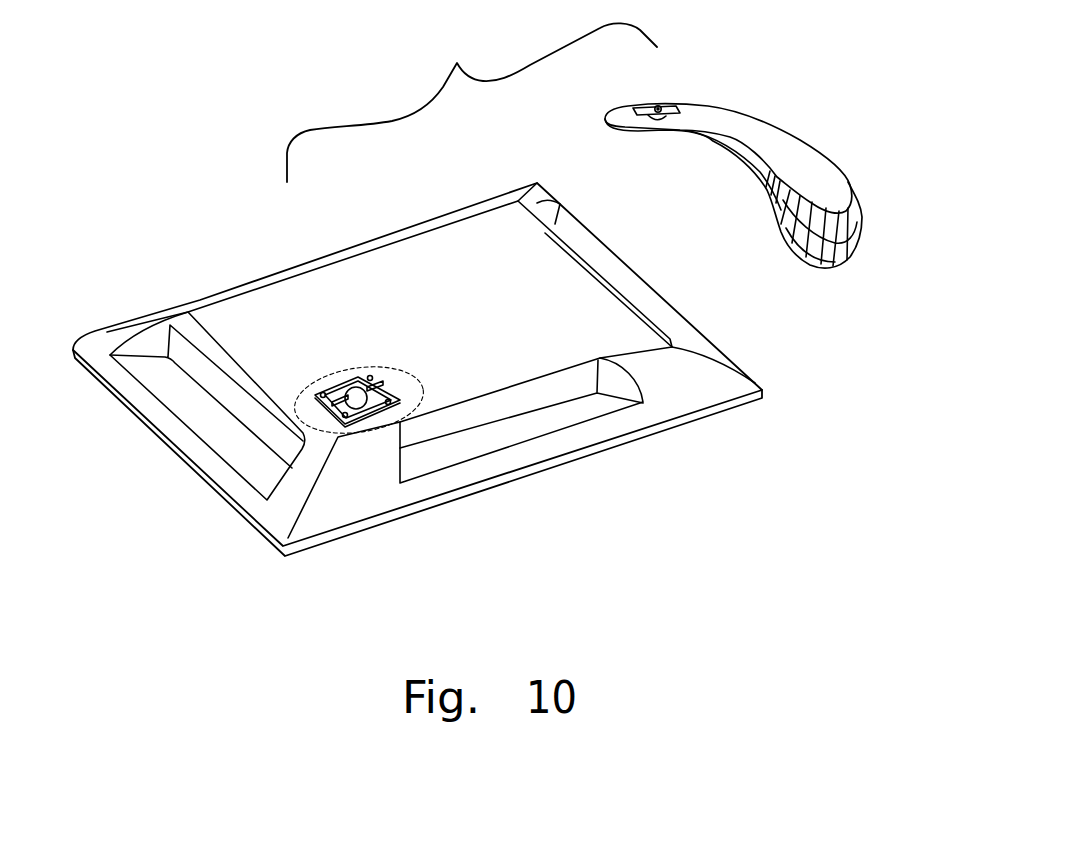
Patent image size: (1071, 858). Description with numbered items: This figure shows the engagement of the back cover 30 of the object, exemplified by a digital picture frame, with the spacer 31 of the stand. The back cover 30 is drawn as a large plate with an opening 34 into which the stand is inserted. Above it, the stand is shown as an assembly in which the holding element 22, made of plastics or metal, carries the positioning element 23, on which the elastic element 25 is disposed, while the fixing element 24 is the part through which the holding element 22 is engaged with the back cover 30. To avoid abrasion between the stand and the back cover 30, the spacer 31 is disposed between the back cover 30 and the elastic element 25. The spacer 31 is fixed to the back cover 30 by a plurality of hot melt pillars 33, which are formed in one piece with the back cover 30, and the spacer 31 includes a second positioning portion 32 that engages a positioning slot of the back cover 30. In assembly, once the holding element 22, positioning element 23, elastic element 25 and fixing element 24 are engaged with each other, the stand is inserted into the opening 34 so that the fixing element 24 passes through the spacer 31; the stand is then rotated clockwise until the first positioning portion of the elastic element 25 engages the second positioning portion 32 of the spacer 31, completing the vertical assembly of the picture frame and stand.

The holding element 22 is at (830, 170).
The positioning element 23 is at (659, 122).
The fixing element 24 is at (659, 106).
The elastic element 25 is at (673, 108).
The back cover 30 is at (623, 426).
The spacer 31 is at (403, 398).
The second positioning portion 32 is at (346, 386).
The hot melt pillars 33 is at (372, 376).
The opening 34 is at (357, 404).